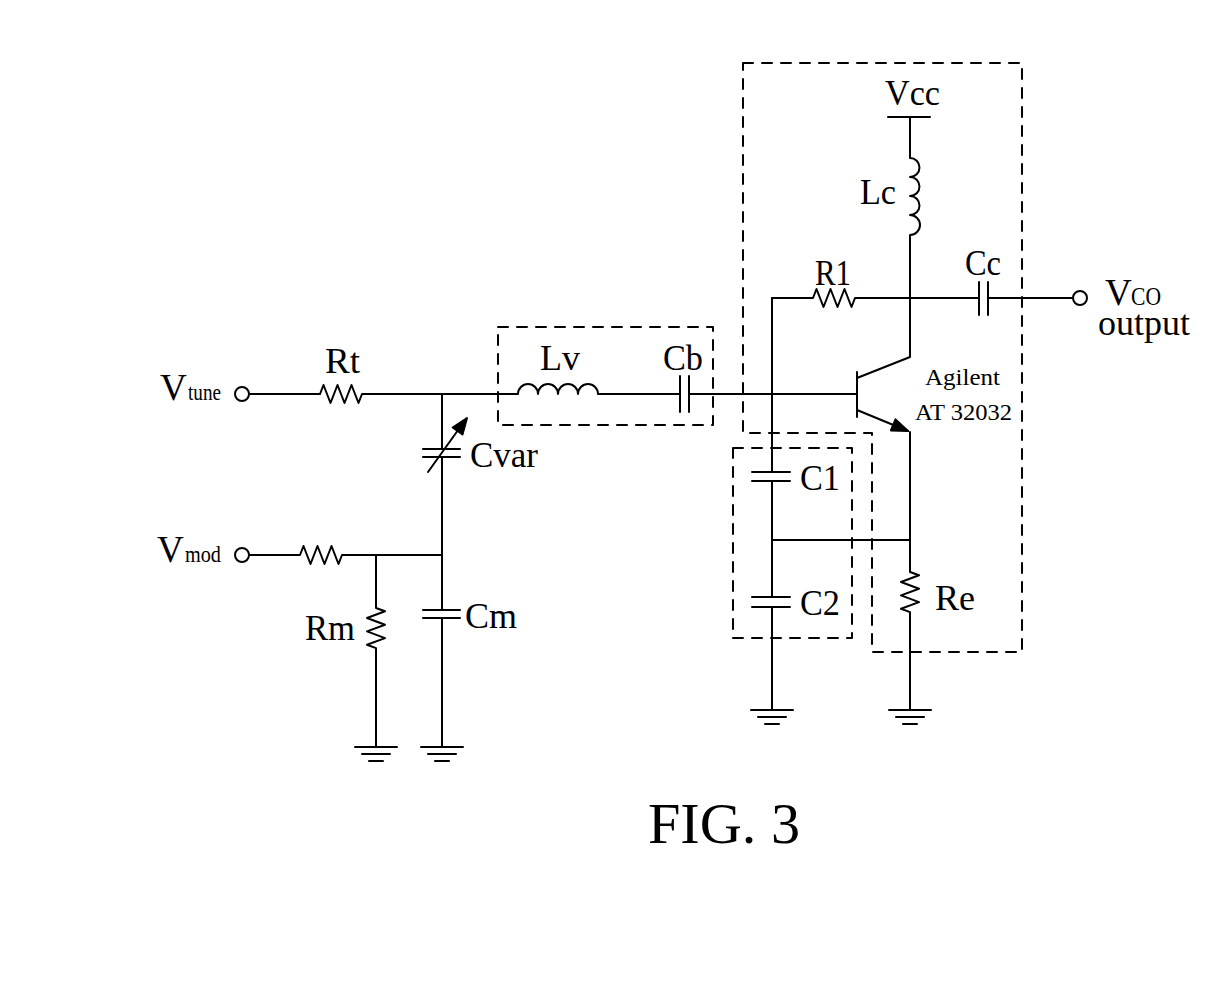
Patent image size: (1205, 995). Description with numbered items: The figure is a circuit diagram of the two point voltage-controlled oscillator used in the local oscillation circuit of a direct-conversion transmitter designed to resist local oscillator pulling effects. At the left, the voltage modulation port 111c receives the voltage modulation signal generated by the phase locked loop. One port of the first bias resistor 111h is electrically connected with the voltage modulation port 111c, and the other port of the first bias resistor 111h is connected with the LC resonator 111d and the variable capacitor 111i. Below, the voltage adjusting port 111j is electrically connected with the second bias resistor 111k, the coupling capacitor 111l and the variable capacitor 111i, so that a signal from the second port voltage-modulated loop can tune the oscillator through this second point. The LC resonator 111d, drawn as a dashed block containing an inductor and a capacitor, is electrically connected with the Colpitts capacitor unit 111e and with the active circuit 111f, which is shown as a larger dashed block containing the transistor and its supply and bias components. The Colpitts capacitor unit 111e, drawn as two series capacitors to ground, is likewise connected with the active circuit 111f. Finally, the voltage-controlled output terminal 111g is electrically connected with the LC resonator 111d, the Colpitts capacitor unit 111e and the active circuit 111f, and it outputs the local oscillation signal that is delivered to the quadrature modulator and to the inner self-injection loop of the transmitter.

The voltage modulation port 111c is at (243, 386).
The first bias resistor 111h is at (343, 407).
The variable capacitor 111i is at (455, 462).
The voltage adjusting port 111j is at (243, 562).
The second bias resistor 111k is at (370, 645).
The coupling capacitor 111l is at (447, 622).
The LC resonator 111d is at (608, 326).
The Colpitts capacitor unit 111e is at (733, 560).
The active circuit 111f is at (1022, 537).
The voltage-controlled output terminal 111g is at (1080, 288).